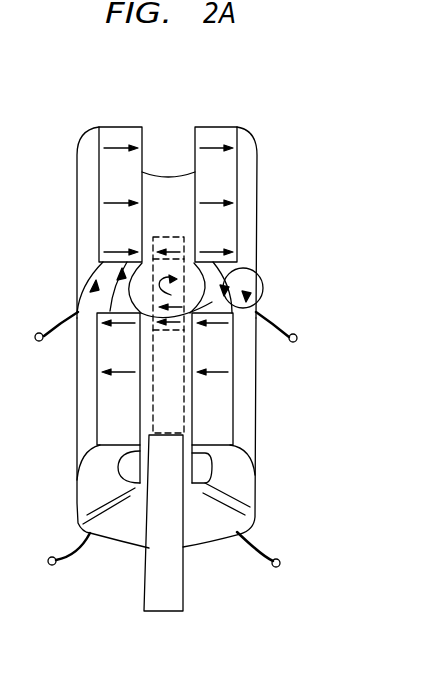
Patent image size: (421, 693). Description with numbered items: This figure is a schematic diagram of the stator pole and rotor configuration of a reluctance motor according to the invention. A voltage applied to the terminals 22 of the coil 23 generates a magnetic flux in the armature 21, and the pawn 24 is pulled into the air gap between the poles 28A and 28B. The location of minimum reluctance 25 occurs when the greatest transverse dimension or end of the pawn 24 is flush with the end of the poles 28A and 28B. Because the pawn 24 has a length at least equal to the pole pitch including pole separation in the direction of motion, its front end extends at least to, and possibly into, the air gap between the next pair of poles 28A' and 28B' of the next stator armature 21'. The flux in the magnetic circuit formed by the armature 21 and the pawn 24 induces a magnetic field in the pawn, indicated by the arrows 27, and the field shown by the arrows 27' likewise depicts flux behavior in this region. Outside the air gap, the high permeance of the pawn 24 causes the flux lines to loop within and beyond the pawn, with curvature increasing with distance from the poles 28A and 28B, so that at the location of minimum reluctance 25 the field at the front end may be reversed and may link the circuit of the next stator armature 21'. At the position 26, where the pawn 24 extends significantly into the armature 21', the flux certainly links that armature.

The armature 21 is at (198, 433).
The next stator armature 21' is at (198, 222).
The terminals 22 is at (283, 558).
The coil 23 is at (118, 547).
The pawn 24 is at (184, 597).
The location of minimum reluctance 25 is at (200, 424).
The position 26 is at (173, 238).
The arrows 27 is at (189, 330).
The second magnetic pole 27' is at (266, 287).
The pole 28A is at (270, 378).
The pole 28B is at (83, 378).
The next pole 28A' is at (237, 170).
The next pole 28B' is at (96, 170).